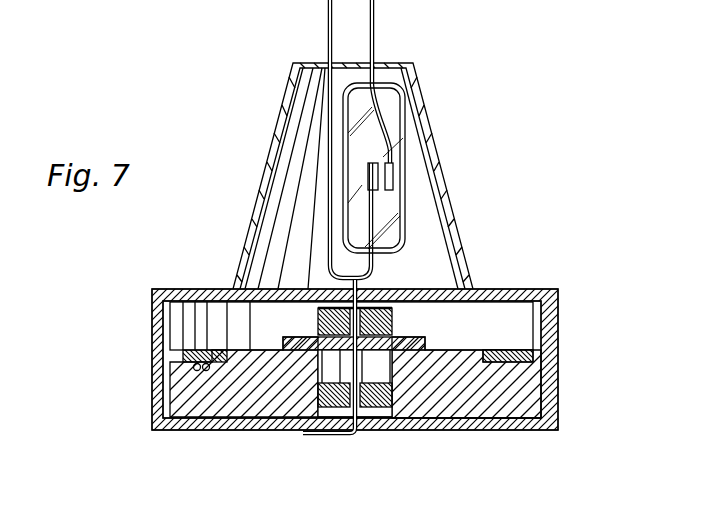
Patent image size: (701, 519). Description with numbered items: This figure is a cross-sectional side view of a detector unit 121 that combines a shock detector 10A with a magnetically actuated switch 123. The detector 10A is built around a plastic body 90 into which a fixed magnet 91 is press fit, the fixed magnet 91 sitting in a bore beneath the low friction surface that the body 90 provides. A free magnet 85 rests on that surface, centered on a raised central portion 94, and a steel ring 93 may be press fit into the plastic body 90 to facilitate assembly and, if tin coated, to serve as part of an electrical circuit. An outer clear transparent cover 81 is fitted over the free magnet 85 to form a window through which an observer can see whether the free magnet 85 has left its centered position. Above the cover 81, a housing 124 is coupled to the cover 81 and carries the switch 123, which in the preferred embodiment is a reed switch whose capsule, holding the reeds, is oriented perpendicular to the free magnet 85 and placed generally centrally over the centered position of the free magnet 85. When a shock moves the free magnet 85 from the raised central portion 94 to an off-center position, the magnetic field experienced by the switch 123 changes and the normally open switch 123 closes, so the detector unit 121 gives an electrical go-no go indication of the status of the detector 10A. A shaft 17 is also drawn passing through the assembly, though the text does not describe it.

The detector 10A is at (153, 316).
The shaft 17 is at (367, 414).
The transparent cover 81 is at (517, 296).
The free magnet 85 is at (307, 289).
The plastic body 90 is at (512, 405).
The fixed magnet 91 is at (421, 397).
The steel ring 93 is at (533, 357).
The raised central portion 94 is at (417, 336).
The detector unit 121 is at (500, 235).
The magnetically actuated switch 123 is at (406, 185).
The housing 124 is at (430, 118).